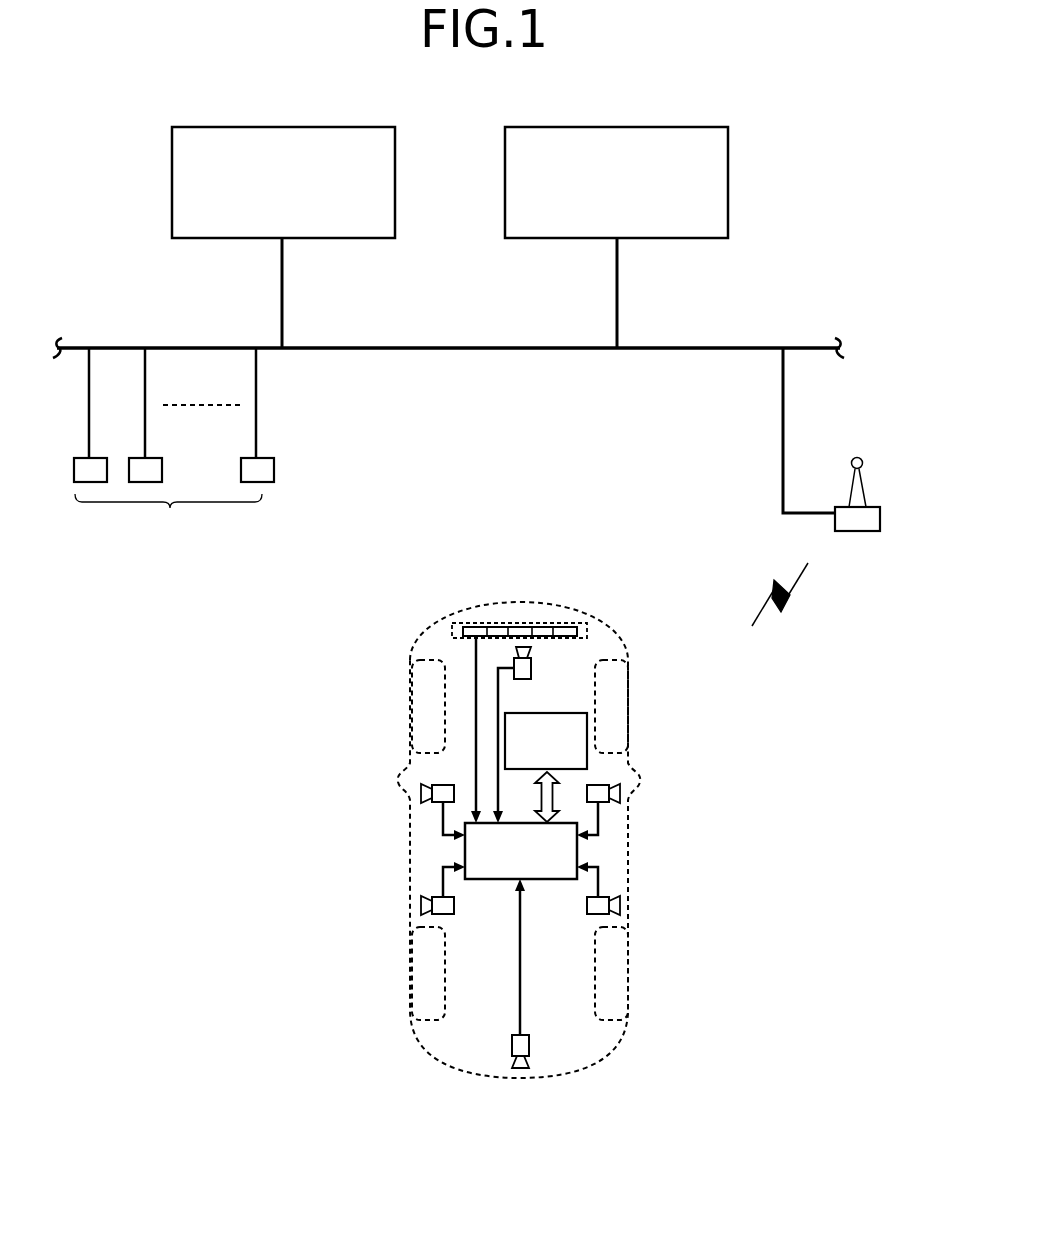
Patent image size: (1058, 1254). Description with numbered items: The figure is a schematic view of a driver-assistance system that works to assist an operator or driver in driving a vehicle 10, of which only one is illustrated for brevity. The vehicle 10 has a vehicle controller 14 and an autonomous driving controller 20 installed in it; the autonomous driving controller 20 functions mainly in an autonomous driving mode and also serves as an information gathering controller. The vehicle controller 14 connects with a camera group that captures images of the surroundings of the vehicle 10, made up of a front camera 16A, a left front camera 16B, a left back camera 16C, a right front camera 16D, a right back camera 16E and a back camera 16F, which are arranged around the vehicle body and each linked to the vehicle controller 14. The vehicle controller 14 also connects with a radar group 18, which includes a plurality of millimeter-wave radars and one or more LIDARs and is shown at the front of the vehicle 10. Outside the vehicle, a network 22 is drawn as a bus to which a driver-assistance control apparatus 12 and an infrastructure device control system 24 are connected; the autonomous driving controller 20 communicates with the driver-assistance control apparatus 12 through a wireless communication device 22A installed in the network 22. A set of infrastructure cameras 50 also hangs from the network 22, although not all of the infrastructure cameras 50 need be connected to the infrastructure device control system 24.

The vehicle 10 is at (478, 605).
The driver-assistance control apparatus 12 is at (602, 127).
The vehicle controller 14 is at (560, 880).
The front camera 16A is at (532, 668).
The left front camera 16B is at (437, 803).
The left back camera 16C is at (437, 897).
The right front camera 16D is at (603, 802).
The right back camera 16E is at (603, 897).
The back camera 16F is at (529, 1048).
The radar group 18 is at (551, 619).
The autonomous driving controller 20 is at (522, 713).
The network 22 is at (708, 348).
The wireless communication device 22A is at (862, 483).
The infrastructure device control system 24 is at (268, 127).
The infrastructure cameras 50 is at (174, 441).